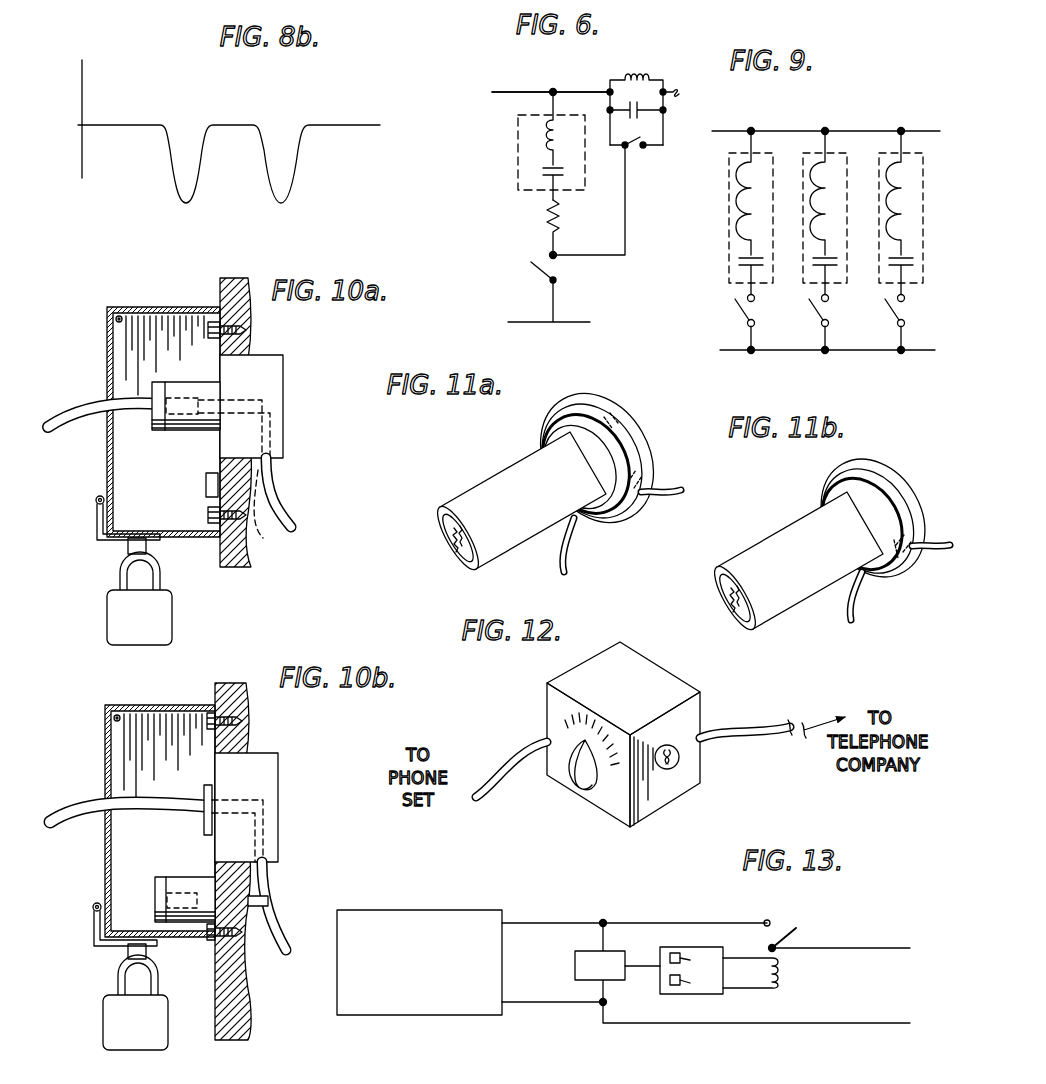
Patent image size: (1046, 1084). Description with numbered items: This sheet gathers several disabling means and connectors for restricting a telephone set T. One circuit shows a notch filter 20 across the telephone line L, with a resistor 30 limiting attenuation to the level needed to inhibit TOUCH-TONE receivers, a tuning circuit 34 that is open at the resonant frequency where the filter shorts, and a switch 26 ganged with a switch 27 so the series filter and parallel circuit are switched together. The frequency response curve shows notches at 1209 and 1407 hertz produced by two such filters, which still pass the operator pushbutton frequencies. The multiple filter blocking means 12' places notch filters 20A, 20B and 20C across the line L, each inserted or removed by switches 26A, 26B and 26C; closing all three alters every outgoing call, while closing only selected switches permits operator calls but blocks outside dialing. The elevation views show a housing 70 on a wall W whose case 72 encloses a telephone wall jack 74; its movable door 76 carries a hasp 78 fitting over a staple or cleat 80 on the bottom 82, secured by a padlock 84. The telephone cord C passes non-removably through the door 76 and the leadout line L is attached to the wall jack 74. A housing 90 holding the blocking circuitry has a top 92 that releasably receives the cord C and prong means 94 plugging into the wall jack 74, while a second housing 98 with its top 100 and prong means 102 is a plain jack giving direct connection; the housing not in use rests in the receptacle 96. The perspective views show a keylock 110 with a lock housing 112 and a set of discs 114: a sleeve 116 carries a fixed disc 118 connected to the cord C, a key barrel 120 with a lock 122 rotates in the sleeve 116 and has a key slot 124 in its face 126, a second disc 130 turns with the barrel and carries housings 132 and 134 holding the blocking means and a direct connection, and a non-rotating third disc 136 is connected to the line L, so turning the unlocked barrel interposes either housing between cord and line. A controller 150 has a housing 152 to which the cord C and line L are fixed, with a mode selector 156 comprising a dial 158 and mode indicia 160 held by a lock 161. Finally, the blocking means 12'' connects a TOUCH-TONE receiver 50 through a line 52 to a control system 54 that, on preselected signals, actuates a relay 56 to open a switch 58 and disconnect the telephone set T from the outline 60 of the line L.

In FIG. 8B, the first notch frequency 1209 is at (187, 209).
In FIG. 8B, the second notch frequency 1407 is at (282, 209).
In FIG. 6, the telephone leadout line L is at (527, 91).
In FIG. 9, the telephone leadout line L is at (718, 128).
In FIG. 10A, the telephone leadout line L is at (279, 502).
In FIG. 10B, the telephone leadout line L is at (272, 892).
In FIG. 11A, the telephone leadout line L is at (671, 496).
In FIG. 11B, the telephone leadout line L is at (936, 554).
In FIG. 12, the telephone leadout line L is at (749, 739).
In FIG. 13, the telephone leadout line L is at (570, 920).
In FIG. 10A, the telephone cord C is at (70, 438).
In FIG. 10B, the telephone cord C is at (66, 830).
In FIG. 11A, the telephone cord C is at (577, 575).
In FIG. 11B, the telephone cord C is at (861, 618).
In FIG. 12, the telephone cord C is at (512, 771).
In FIG. 10A, the wall W is at (233, 302).
In FIG. 10B, the wall W is at (229, 700).
In FIG. 13, the telephone set T is at (411, 908).
In FIG. 6, the notch filter 20 is at (512, 158).
In FIG. 6, the resistor 30 is at (540, 222).
In FIG. 6, the switch 26 is at (531, 280).
In FIG. 6, the switch 27 is at (637, 154).
In FIG. 6, the tuning circuit 34 is at (647, 73).
In FIG. 9, the multiple filter blocking means 12' is at (875, 75).
In FIG. 9, the notch filter 20A is at (773, 141).
In FIG. 9, the notch filter 20B is at (844, 148).
In FIG. 9, the notch filter 20C is at (913, 148).
In FIG. 9, the switch 26A is at (757, 316).
In FIG. 9, the switch 26B is at (812, 322).
In FIG. 9, the switch 26C is at (909, 320).
In FIG. 10A, the housing 70 is at (105, 302).
In FIG. 10B, the housing 70 is at (169, 701).
In FIG. 10A, the case 72 is at (143, 303).
In FIG. 10B, the case 72 is at (134, 702).
In FIG. 10A, the telephone wall jack 74 is at (244, 391).
In FIG. 10B, the telephone wall jack 74 is at (249, 796).
In FIG. 10A, the movable door 76 is at (105, 356).
In FIG. 10B, the movable door 76 is at (103, 760).
In FIG. 10A, the hasp 78 is at (92, 542).
In FIG. 10B, the hasp 78 is at (88, 945).
In FIG. 10A, the staple or cleat 80 is at (150, 556).
In FIG. 10B, the staple or cleat 80 is at (149, 952).
In FIG. 10A, the bottom 82 is at (226, 560).
In FIG. 10B, the bottom 82 is at (223, 946).
In FIG. 10A, the padlock 84 is at (133, 619).
In FIG. 10B, the padlock 84 is at (135, 1014).
In FIG. 10A, the housing 90 is at (187, 380).
In FIG. 10B, the housing 90 is at (176, 876).
In FIG. 10A, the top 92 is at (163, 424).
In FIG. 10B, the top 92 is at (158, 892).
In FIG. 10A, the prong means 94 is at (268, 404).
In FIG. 10B, the prong means 94 is at (268, 905).
In FIG. 10A, the receptacle 96 is at (259, 521).
In FIG. 10B, the receptacle 96 is at (237, 885).
In FIG. 10A, the second housing 98 is at (204, 489).
In FIG. 10B, the second housing 98 is at (208, 783).
In FIG. 10A, the top 100 is at (212, 473).
In FIG. 10B, the top 100 is at (205, 831).
In FIG. 10A, the prong means 102 is at (268, 475).
In FIG. 10B, the prong means 102 is at (268, 798).
In FIG. 11A, the keylock 110 is at (503, 488).
In FIG. 11A, the lock housing 112 is at (496, 468).
In FIG. 11B, the lock housing 112 is at (815, 602).
In FIG. 11A, the set of discs 114 is at (583, 396).
In FIG. 11A, the sleeve 116 is at (473, 567).
In FIG. 11B, the sleeve 116 is at (716, 572).
In FIG. 11A, the disc 118 is at (598, 534).
In FIG. 11B, the disc 118 is at (838, 473).
In FIG. 11A, the key barrel 120 is at (452, 547).
In FIG. 11B, the key barrel 120 is at (745, 567).
In FIG. 11A, the lock 122 is at (451, 562).
In FIG. 11A, the key slot 124 is at (442, 546).
In FIG. 11B, the key slot 124 is at (733, 622).
In FIG. 11A, the face 126 is at (441, 530).
In FIG. 11A, the second disc 130 is at (576, 414).
In FIG. 11B, the second disc 130 is at (858, 466).
In FIG. 11A, the housing 132 is at (603, 428).
In FIG. 11B, the housing 132 is at (903, 558).
In FIG. 11A, the housing 134 is at (630, 517).
In FIG. 11A, the third disc 136 is at (632, 447).
In FIG. 11B, the third disc 136 is at (891, 472).
In FIG. 12, the controller 150 is at (588, 730).
In FIG. 12, the housing 152 is at (623, 642).
In FIG. 12, the mode selector 156 is at (600, 792).
In FIG. 12, the dial 158 is at (576, 792).
In FIG. 12, the mode indicia 160 is at (581, 717).
In FIG. 12, the lock 161 is at (681, 746).
In FIG. 13, the blocking means 12'' is at (514, 889).
In FIG. 13, the TOUCH-TONE receiver 50 is at (591, 973).
In FIG. 13, the line 52 is at (642, 961).
In FIG. 13, the control system 54 is at (696, 946).
In FIG. 13, the relay 56 is at (790, 976).
In FIG. 13, the switch 58 is at (781, 927).
In FIG. 13, the outline 60 is at (868, 945).